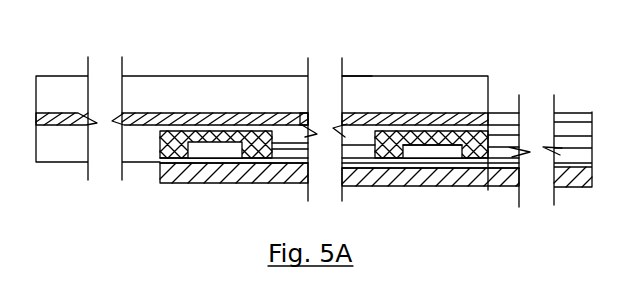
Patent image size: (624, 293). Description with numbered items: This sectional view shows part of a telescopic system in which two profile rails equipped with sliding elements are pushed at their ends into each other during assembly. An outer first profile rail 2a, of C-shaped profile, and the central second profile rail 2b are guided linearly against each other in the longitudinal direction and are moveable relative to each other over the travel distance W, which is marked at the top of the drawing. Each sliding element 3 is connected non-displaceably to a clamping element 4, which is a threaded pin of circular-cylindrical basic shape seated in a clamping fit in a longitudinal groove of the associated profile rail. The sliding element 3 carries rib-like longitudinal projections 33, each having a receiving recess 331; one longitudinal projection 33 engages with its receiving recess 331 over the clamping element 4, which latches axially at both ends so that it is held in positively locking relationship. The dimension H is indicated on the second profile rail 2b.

The first profile rail 2a is at (302, 123).
The second profile rail 2b is at (357, 76).
The sliding element 3 is at (184, 152).
The clamping element 4 is at (228, 150).
The longitudinal projection 33 is at (440, 157).
The receiving recess 331 is at (415, 147).
The height H is at (398, 75).
The travel distance W is at (158, 29).